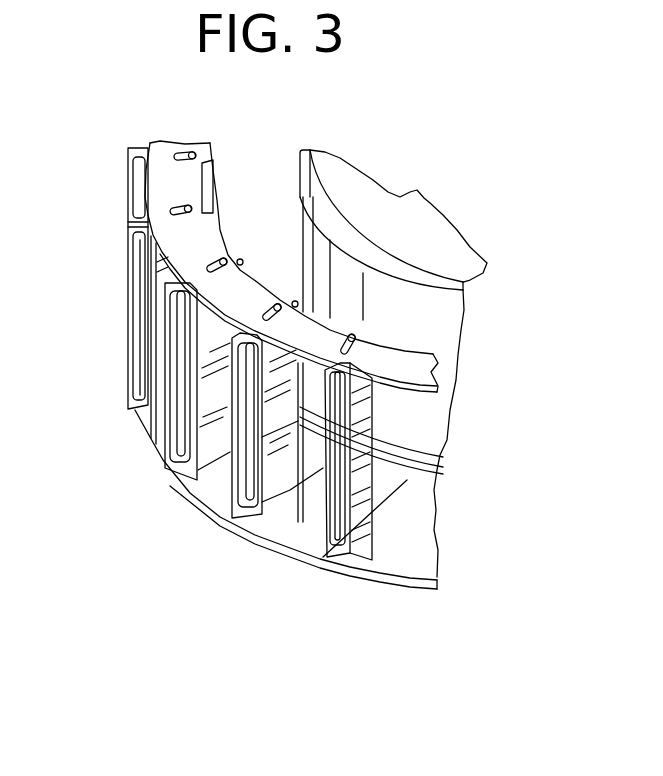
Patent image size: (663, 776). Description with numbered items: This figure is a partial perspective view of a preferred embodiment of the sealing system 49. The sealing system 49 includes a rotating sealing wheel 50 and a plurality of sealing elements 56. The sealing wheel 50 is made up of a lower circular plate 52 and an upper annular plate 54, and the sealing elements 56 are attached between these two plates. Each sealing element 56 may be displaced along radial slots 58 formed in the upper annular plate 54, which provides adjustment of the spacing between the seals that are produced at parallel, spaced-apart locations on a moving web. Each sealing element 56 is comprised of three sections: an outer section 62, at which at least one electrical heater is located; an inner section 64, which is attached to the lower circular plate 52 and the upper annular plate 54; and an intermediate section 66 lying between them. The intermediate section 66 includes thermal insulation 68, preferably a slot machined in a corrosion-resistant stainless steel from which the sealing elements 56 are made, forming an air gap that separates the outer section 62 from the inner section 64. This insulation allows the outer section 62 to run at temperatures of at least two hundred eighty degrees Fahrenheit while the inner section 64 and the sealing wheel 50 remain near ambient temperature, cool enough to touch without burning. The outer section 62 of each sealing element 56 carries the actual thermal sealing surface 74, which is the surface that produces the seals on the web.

The sealing system 49 is at (376, 597).
The sealing wheel 50 is at (455, 180).
The lower circular plate 52 is at (300, 530).
The upper annular plate 54 is at (422, 362).
The sealing element 56 is at (146, 286).
The radial slot 58 is at (180, 207).
The outer section 62 is at (163, 401).
The inner section 64 is at (270, 423).
The intermediate section 66 is at (178, 486).
The thermal insulation 68 is at (266, 537).
The thermal sealing surface 74 is at (323, 548).